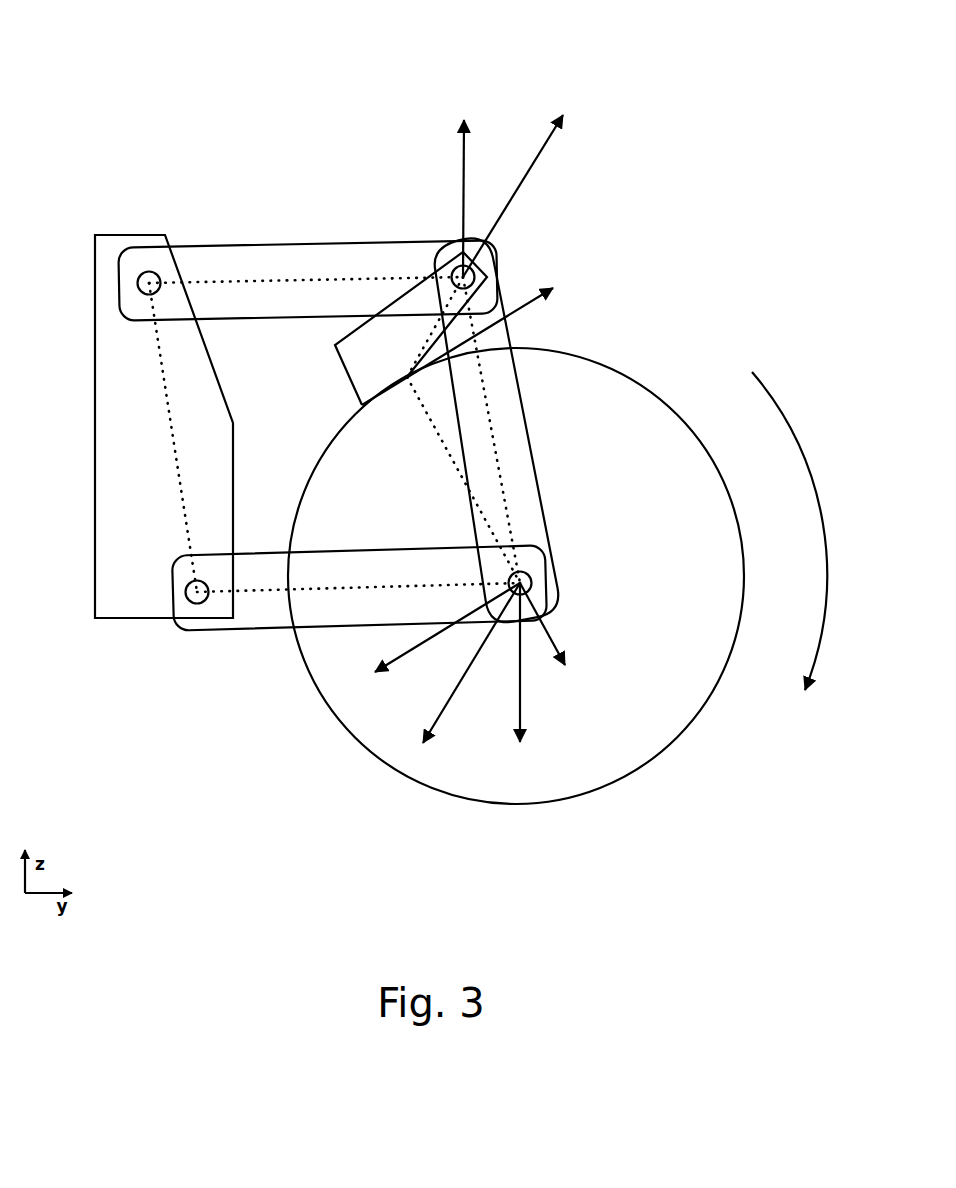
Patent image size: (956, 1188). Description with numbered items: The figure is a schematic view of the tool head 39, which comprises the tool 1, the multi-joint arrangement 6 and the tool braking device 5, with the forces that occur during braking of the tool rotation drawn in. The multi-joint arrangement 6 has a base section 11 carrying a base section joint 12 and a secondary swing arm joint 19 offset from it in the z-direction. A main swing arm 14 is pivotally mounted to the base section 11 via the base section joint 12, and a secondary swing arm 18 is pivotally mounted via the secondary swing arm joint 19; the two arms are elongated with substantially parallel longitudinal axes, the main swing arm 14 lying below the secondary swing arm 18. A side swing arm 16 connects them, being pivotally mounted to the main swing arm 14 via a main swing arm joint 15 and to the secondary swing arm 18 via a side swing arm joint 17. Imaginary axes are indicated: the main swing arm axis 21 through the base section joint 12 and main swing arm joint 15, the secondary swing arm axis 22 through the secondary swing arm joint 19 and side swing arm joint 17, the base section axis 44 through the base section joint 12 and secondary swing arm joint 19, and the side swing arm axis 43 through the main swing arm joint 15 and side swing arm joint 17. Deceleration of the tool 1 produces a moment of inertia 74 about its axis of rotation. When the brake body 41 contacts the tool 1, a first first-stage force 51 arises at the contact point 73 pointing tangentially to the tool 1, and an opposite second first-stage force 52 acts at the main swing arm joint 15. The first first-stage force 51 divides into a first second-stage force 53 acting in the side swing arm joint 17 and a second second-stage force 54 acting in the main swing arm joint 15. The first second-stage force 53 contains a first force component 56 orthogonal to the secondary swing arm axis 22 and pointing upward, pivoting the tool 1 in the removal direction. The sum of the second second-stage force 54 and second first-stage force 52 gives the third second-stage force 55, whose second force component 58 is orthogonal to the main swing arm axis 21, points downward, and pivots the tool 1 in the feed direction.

The tool 1 is at (720, 502).
The tool braking device 5 is at (362, 328).
The brake body 41 is at (350, 365).
The multi-joint arrangement 6 is at (70, 345).
The base section 11 is at (113, 457).
The base section joint 12 is at (197, 604).
The main swing arm 14 is at (272, 613).
The main swing arm joint 15 is at (532, 582).
The side swing arm 16 is at (522, 460).
The side swing arm joint 17 is at (440, 245).
The secondary swing arm 18 is at (274, 258).
The secondary swing arm joint 19 is at (148, 271).
The main swing arm axis 21 is at (358, 580).
The secondary swing arm axis 22 is at (306, 270).
The tool head 39 is at (178, 86).
The side swing arm axis 43 is at (491, 430).
The base section axis 44 is at (176, 437).
The first first-stage force 51 is at (462, 346).
The second first-stage force 52 is at (447, 635).
The first second-stage force 53 is at (513, 196).
The second second-stage force 54 is at (553, 624).
The third second-stage force 55 is at (471, 666).
The first force component 56 is at (448, 198).
The second force component 58 is at (537, 662).
The contact point 73 is at (407, 377).
The moment of inertia 74 is at (809, 531).